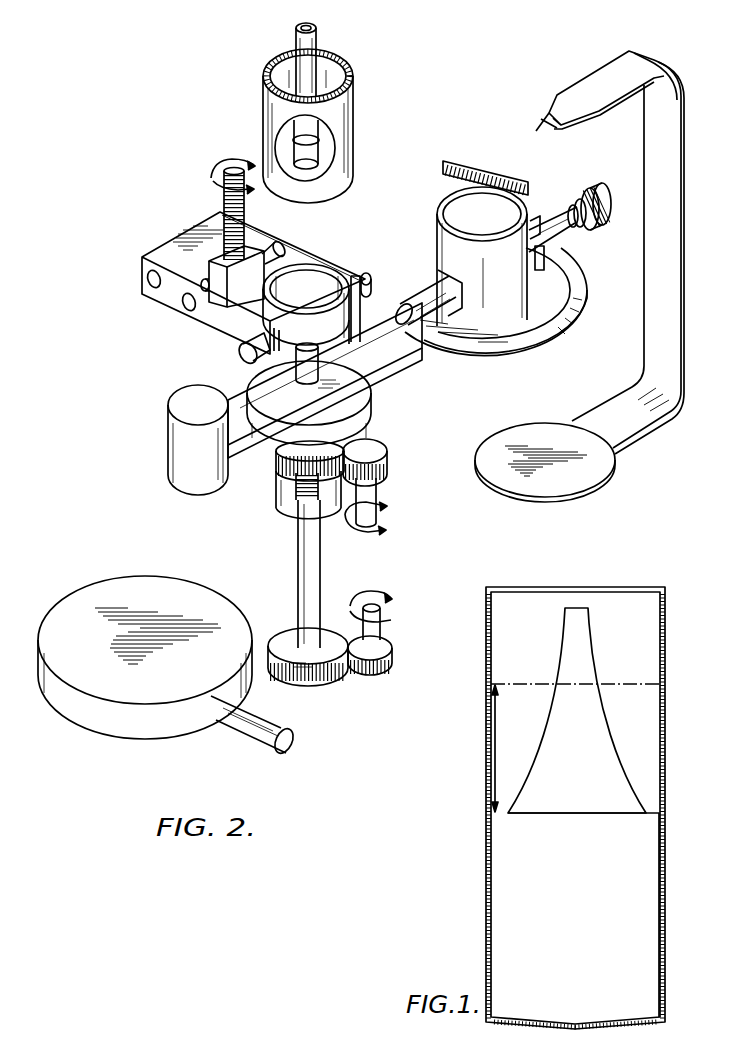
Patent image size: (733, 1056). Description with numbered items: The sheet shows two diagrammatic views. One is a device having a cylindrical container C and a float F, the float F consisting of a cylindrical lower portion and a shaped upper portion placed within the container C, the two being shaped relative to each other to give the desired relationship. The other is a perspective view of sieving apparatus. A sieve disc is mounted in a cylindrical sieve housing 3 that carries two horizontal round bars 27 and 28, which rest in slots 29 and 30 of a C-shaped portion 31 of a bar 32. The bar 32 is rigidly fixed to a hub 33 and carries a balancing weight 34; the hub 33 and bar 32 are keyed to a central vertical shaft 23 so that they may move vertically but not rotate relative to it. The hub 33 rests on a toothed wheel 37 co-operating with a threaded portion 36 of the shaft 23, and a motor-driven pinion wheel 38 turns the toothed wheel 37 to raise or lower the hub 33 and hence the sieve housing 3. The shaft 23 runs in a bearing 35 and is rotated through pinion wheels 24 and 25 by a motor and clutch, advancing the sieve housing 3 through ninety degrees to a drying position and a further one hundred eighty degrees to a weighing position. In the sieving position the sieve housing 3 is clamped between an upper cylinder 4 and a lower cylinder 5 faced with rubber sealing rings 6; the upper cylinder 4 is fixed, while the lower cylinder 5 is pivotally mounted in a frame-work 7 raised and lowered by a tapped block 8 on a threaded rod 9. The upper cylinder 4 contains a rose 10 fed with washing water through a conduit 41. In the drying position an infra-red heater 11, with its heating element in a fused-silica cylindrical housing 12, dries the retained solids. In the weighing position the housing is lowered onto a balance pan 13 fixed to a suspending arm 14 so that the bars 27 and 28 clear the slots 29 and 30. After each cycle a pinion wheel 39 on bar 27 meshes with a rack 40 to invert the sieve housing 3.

In FIG. 2, the sieve housing 3 is at (432, 230).
In FIG. 2, the upper cylinder 4 is at (332, 124).
In FIG. 2, the lower cylinder 5 is at (361, 285).
In FIG. 2, the rubber sealing rings 6 is at (328, 266).
In FIG. 2, the frame-work 7 is at (196, 308).
In FIG. 2, the tapped block 8 is at (231, 278).
In FIG. 2, the threaded rod 9 is at (217, 189).
In FIG. 2, the rose 10 is at (315, 136).
In FIG. 2, the infra-red heater 11 is at (120, 575).
In FIG. 2, the cylindrical housing 12 is at (175, 708).
In FIG. 2, the balance pan 13 is at (585, 469).
In FIG. 2, the suspending arm 14 is at (645, 302).
In FIG. 2, the central vertical shaft 23 is at (289, 560).
In FIG. 2, the pinion wheel 24 is at (379, 669).
In FIG. 2, the pinion wheel 25 is at (322, 673).
In FIG. 2, the round bar 27 is at (531, 250).
In FIG. 2, the round bar 28 is at (412, 296).
In FIG. 2, the slot 29 is at (552, 237).
In FIG. 2, the slot 30 is at (393, 334).
In FIG. 2, the C-shaped portion 31 is at (542, 308).
In FIG. 2, the bar 32 is at (349, 345).
In FIG. 2, the hub 33 is at (349, 389).
In FIG. 2, the balancing weight 34 is at (170, 435).
In FIG. 2, the bearing 35 is at (280, 488).
In FIG. 2, the threaded portion 36 is at (310, 482).
In FIG. 2, the toothed wheel 37 is at (273, 451).
In FIG. 2, the pinion wheel 38 is at (372, 465).
In FIG. 2, the pinion wheel 39 is at (587, 176).
In FIG. 2, the rack 40 is at (488, 165).
In FIG. 2, the conduit 41 is at (305, 41).
In FIG. 1, the cylindrical container C is at (654, 676).
In FIG. 1, the float F is at (634, 855).
In FIG. 1, the distance X is at (501, 748).